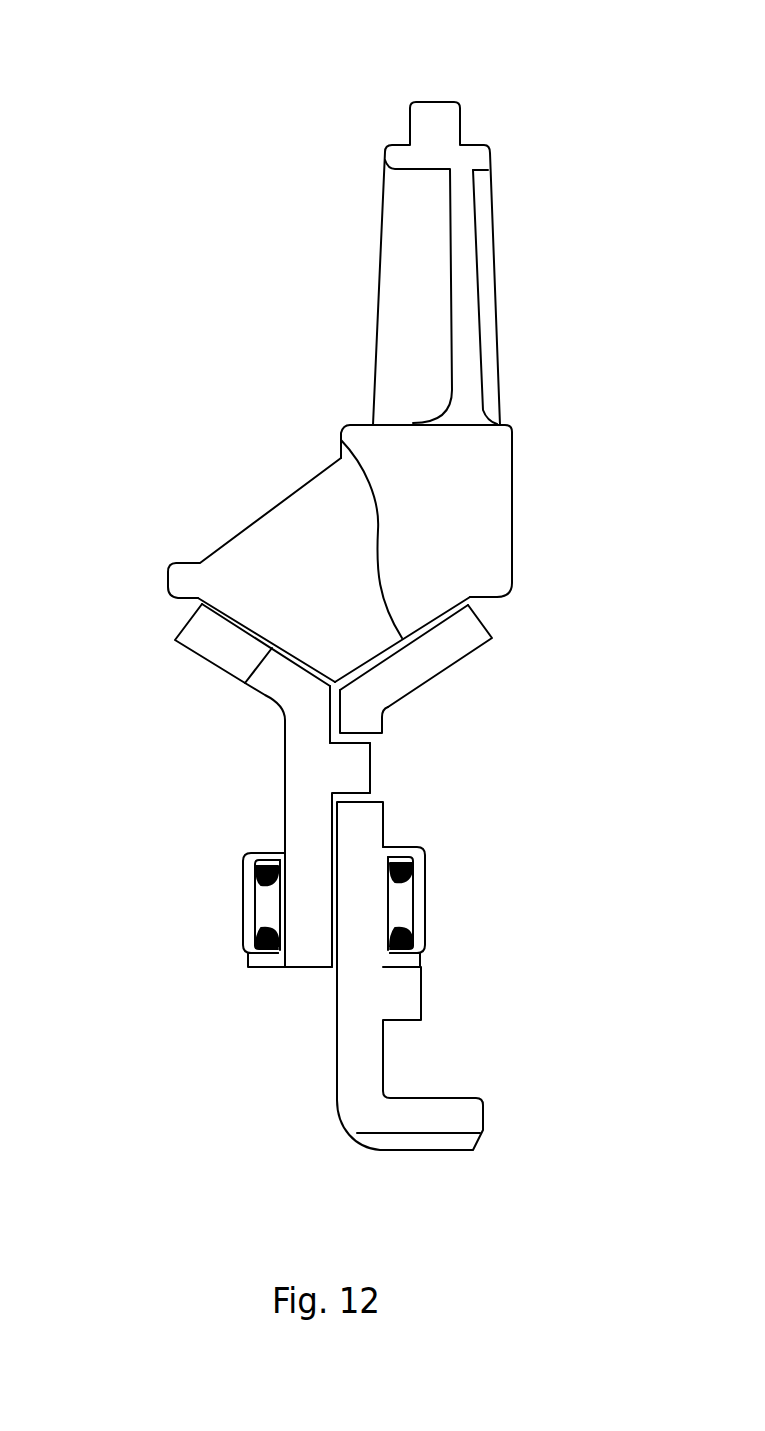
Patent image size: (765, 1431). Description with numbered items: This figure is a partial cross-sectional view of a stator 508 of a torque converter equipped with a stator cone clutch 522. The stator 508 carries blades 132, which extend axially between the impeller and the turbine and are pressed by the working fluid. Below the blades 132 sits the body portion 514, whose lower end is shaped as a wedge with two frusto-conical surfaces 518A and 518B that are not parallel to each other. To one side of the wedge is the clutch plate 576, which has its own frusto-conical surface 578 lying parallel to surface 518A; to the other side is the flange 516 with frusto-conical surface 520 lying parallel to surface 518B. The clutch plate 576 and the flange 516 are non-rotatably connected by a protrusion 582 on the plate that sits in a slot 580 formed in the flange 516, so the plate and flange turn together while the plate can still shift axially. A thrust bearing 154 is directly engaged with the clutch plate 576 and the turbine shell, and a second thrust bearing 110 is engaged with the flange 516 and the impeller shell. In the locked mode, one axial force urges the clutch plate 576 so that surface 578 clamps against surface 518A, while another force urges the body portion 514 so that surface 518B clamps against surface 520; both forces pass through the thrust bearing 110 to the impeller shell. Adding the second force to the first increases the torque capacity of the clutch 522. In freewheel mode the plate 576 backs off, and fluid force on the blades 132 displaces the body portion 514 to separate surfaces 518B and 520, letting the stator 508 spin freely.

The stator cone clutch 522 is at (560, 75).
The stator 508 is at (545, 432).
The blades 132 is at (463, 296).
The body portion 514 is at (519, 533).
The frusto-conical surface 518A is at (252, 682).
The frusto-conical surface 518B is at (338, 442).
The frusto-conical surface 520 is at (430, 632).
The frusto-conical surface 578 is at (250, 685).
The clutch plate 576 is at (260, 698).
The protrusion 582 is at (355, 758).
The slot 580 is at (377, 790).
The flange 516 is at (333, 1087).
The thrust bearing 110 is at (425, 918).
The thrust bearing 154 is at (243, 918).